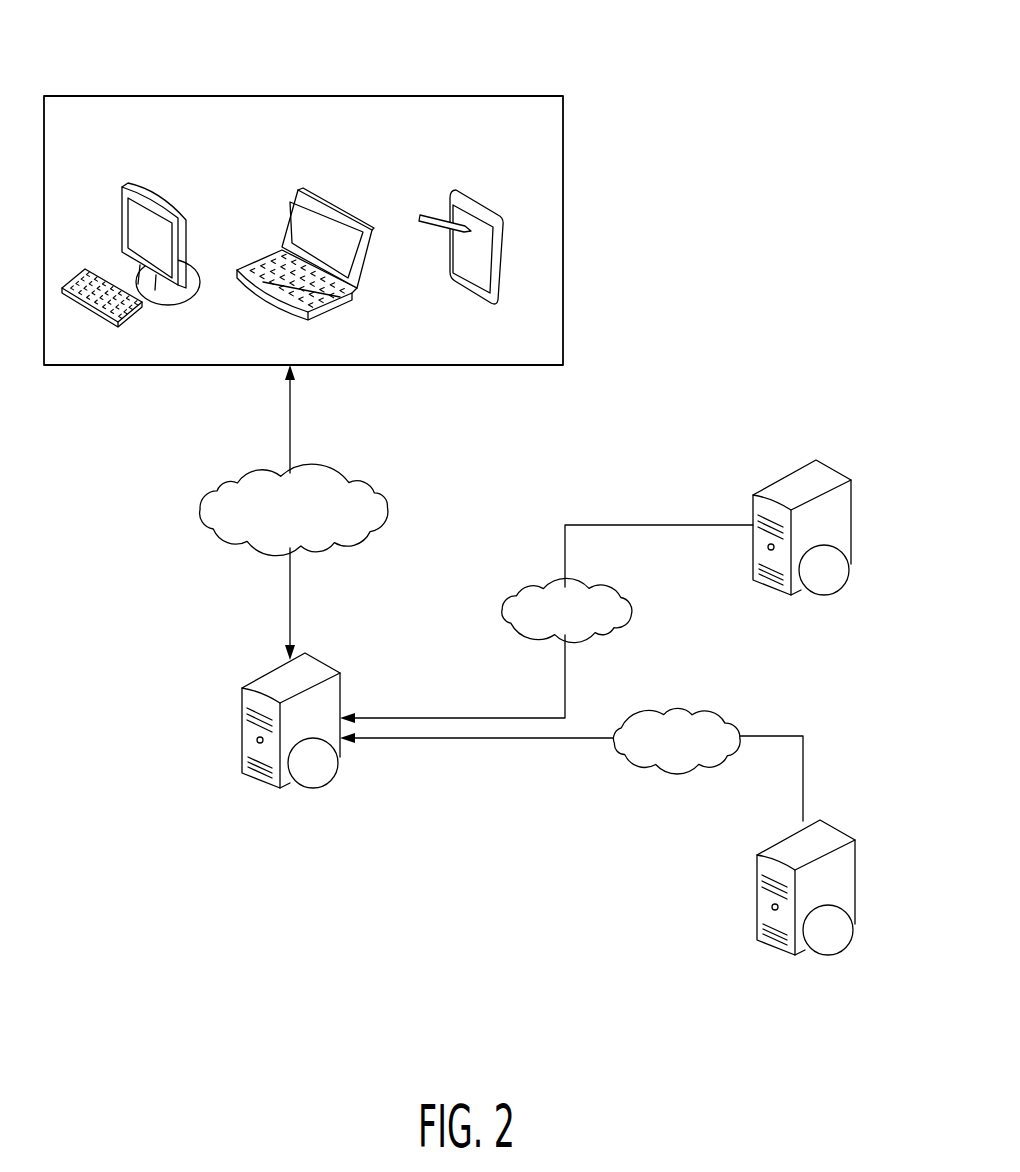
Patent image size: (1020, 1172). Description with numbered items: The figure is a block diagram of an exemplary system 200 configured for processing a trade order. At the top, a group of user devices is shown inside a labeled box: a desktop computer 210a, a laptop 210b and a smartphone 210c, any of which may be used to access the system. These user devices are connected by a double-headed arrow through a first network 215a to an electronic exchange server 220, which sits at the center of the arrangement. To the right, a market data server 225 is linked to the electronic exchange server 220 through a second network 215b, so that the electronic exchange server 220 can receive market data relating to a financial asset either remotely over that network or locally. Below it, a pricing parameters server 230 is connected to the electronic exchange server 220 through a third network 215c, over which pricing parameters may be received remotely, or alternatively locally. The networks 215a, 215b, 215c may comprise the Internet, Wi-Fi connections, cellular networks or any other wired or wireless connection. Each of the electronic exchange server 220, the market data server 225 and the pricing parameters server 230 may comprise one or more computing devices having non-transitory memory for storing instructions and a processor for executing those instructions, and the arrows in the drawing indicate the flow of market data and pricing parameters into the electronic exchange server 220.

The system 200 is at (670, 86).
The desktop computer 210a is at (166, 193).
The laptop 210b is at (343, 208).
The smartphone 210c is at (479, 195).
The network 215a is at (390, 492).
The network 215b is at (537, 583).
The network 215c is at (628, 768).
The electronic exchange server 220 is at (322, 658).
The market data server 225 is at (783, 476).
The pricing parameters server 230 is at (755, 898).